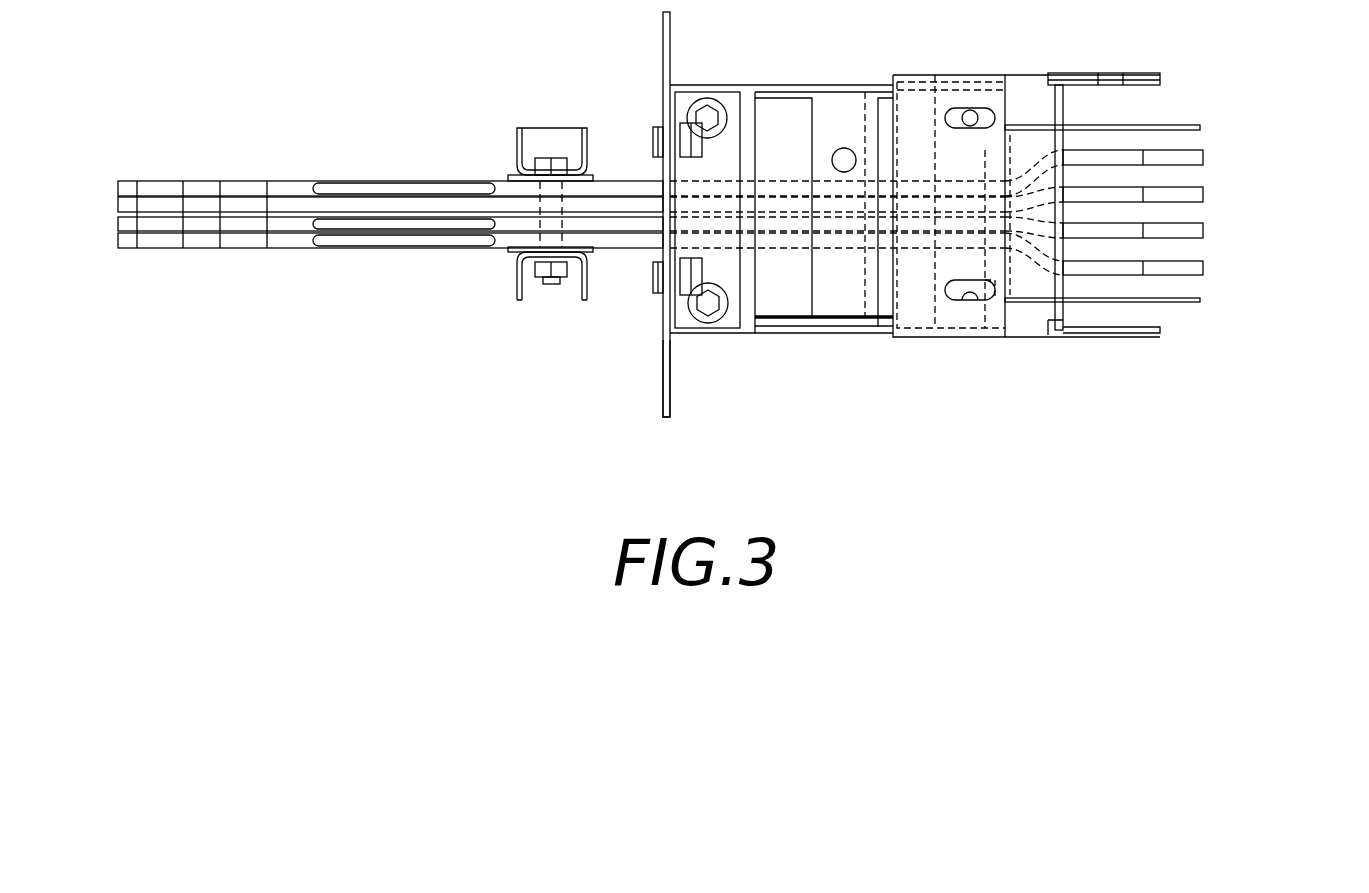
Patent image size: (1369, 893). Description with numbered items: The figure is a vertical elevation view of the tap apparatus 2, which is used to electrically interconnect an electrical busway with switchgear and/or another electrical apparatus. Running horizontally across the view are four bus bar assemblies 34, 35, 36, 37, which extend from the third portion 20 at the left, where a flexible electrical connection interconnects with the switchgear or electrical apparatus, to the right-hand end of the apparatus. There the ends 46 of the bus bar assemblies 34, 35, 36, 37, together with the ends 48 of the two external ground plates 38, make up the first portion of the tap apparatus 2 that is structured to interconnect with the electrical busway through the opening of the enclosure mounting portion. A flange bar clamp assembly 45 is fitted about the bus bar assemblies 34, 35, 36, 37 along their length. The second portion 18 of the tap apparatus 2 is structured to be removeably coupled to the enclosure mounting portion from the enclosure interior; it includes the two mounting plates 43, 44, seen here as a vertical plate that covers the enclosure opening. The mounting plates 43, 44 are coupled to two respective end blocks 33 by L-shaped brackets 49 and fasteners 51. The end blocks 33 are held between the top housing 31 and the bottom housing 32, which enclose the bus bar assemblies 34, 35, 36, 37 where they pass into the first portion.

The tap apparatus 2 is at (982, 412).
The second portion 18 is at (600, 410).
The third portion 20 is at (178, 152).
The top housing 31 is at (780, 84).
The bottom housing 32 is at (820, 330).
The end blocks 33 is at (880, 107).
The bus bar assembly 34 is at (125, 186).
The bus bar assembly 35 is at (125, 205).
The bus bar assembly 36 is at (125, 224).
The bus bar assembly 37 is at (125, 242).
The external ground plates 38 is at (1168, 125).
The mounting plate 43 is at (663, 30).
The mounting plate 44 is at (663, 370).
The flange bar clamp assembly 45 is at (540, 126).
The ends of the bus bar assemblies 46 is at (1280, 148).
The ends of the ground plates 48 is at (1200, 127).
The L-shaped brackets 49 is at (722, 147).
The fasteners 51 is at (700, 112).